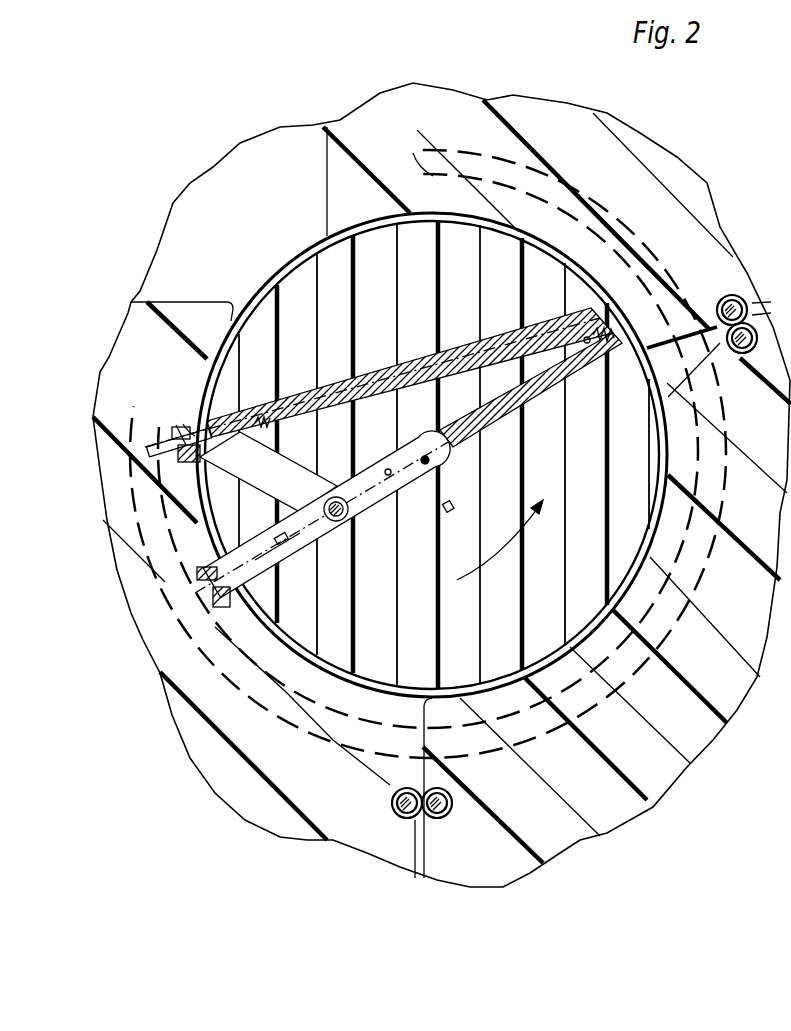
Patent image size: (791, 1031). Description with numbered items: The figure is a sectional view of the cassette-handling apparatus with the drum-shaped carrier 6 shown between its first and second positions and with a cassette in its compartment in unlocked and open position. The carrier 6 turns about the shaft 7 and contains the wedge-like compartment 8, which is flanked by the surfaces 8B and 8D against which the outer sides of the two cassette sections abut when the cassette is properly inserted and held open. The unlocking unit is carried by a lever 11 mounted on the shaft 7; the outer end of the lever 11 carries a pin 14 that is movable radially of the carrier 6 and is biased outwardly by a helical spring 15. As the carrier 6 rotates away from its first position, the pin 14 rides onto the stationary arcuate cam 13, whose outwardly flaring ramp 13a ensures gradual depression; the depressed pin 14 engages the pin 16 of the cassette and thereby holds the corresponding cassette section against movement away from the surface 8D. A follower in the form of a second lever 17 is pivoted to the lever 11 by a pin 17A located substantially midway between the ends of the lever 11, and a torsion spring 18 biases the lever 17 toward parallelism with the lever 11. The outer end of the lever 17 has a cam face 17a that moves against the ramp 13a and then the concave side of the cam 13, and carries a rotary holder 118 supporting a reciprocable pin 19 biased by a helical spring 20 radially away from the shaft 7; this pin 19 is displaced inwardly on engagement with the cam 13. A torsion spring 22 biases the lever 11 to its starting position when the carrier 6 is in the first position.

The carrier 6 is at (630, 530).
The shaft 7 is at (426, 466).
The compartment 8 is at (410, 380).
The surface 8B is at (298, 400).
The surface 8D is at (550, 393).
The lever 11 is at (408, 443).
The cam 13 is at (175, 593).
The ramp 13a is at (105, 463).
The pin 14 is at (242, 540).
The helical spring 15 is at (250, 578).
The pin of the cassette 16 is at (272, 538).
The second lever 17 is at (287, 467).
The cam face 17a is at (183, 424).
The pin 17A is at (355, 505).
The torsion spring 18 is at (366, 510).
The reciprocable pin 19 is at (218, 443).
The helical spring 20 is at (177, 438).
The torsion spring 22 is at (455, 494).
The rotary holder 118 is at (176, 425).